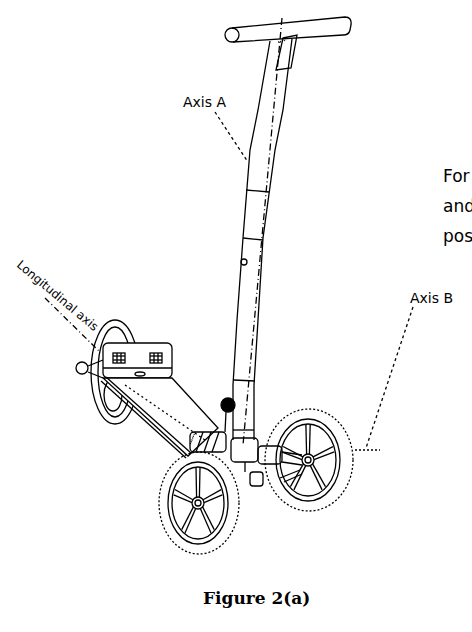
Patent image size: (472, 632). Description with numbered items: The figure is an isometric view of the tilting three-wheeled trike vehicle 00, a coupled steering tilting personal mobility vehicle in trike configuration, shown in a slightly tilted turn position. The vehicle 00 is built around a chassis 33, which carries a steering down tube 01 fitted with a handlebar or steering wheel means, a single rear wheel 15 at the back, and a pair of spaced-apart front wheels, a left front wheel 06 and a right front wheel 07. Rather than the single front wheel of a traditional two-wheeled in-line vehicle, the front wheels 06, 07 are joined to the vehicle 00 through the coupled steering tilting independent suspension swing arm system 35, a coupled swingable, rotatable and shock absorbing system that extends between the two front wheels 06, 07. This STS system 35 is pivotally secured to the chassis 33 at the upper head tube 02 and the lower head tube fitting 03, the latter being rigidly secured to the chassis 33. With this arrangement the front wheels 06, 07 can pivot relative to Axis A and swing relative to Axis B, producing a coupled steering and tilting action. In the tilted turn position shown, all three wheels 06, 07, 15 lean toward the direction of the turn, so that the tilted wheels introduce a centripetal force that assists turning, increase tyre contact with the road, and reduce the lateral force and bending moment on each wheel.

The tilting three-wheeled trike vehicle 00 is at (164, 234).
The steering down tube 01 is at (252, 280).
The upper head tube 02 is at (256, 440).
The lower head tube fitting 03 is at (245, 474).
The left front wheel 06 is at (316, 410).
The right front wheel 07 is at (165, 500).
The rear wheel 15 is at (118, 318).
The chassis 33 is at (178, 392).
The coupled steering tilting independent suspension swing arm system 35 is at (312, 504).